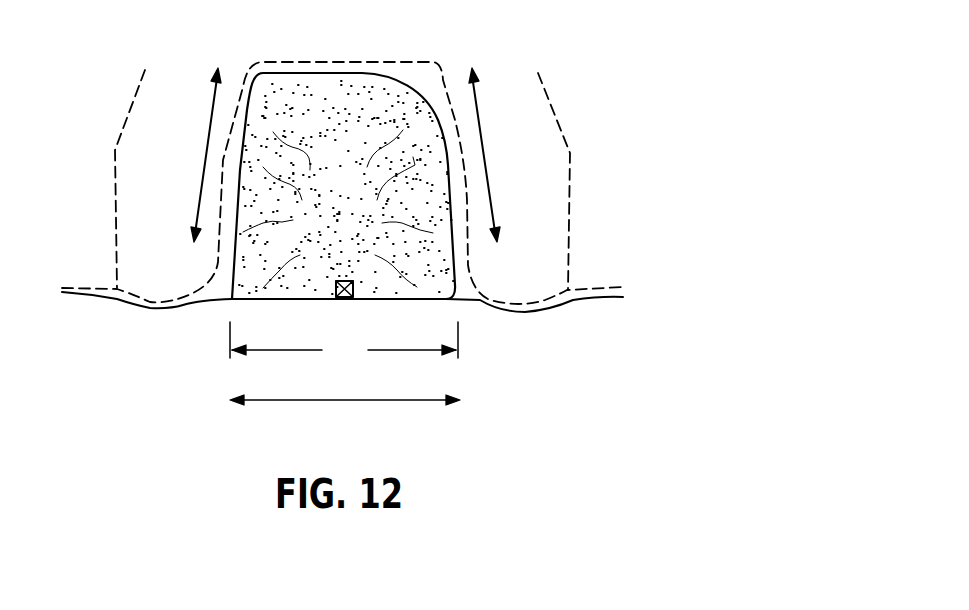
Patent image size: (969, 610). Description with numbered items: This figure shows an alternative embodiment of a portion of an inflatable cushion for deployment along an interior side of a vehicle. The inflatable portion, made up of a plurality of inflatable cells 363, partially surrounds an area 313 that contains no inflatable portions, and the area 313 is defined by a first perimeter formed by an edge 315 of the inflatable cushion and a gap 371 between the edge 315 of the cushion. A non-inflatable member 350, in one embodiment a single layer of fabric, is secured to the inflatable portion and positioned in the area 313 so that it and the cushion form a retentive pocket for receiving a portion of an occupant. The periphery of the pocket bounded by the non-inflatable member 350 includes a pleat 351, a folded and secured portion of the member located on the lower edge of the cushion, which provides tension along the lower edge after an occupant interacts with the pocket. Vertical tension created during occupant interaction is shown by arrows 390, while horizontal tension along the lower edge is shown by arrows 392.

The area 313 is at (247, 108).
The edge of the inflatable cushion 315 is at (226, 252).
The non-inflatable member 350 is at (396, 110).
The pleat 351 is at (335, 290).
The inflatable cells 363 is at (172, 230).
The gap 371 is at (344, 342).
The arrows 390 is at (204, 167).
The arrows 392 is at (345, 402).